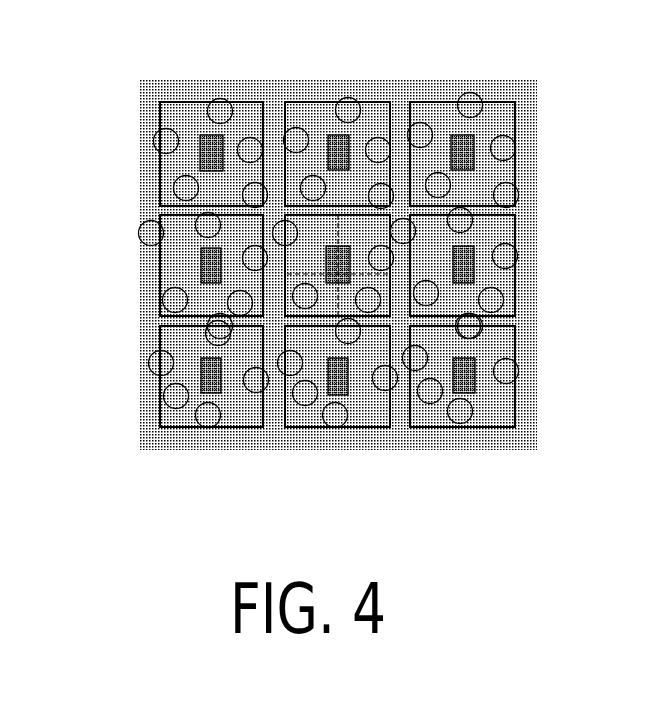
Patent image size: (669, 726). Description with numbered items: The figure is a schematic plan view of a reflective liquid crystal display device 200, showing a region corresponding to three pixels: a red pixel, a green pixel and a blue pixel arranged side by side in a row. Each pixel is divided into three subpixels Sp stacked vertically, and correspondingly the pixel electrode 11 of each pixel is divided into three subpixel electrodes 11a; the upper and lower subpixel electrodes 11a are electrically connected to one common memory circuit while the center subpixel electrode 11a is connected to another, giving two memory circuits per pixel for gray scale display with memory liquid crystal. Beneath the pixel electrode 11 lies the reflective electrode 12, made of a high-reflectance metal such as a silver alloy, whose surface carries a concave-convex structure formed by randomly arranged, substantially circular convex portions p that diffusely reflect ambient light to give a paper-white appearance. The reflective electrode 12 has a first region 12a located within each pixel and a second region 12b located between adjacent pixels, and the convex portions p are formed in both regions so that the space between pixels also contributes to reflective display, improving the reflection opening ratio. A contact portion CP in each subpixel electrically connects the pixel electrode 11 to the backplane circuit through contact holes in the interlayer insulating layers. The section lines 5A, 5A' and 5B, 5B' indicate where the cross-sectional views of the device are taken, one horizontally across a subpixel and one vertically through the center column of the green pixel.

The liquid crystal display device 200 is at (540, 63).
The pixel electrode 11 is at (55, 163).
The subpixel electrode 11a is at (135, 166).
The reflective electrode 12 is at (405, 486).
The first region 12a is at (353, 395).
The second region 12b is at (392, 395).
The convex portion p is at (452, 403).
The contact portion CP is at (341, 246).
The subpixel Sp is at (543, 95).
The section line 5A-5A' 5A is at (219, 275).
The section line 5A- 5A' is at (453, 273).
The section line 5B-5B' 5B is at (330, 243).
The section line 5B- 5B' is at (330, 356).